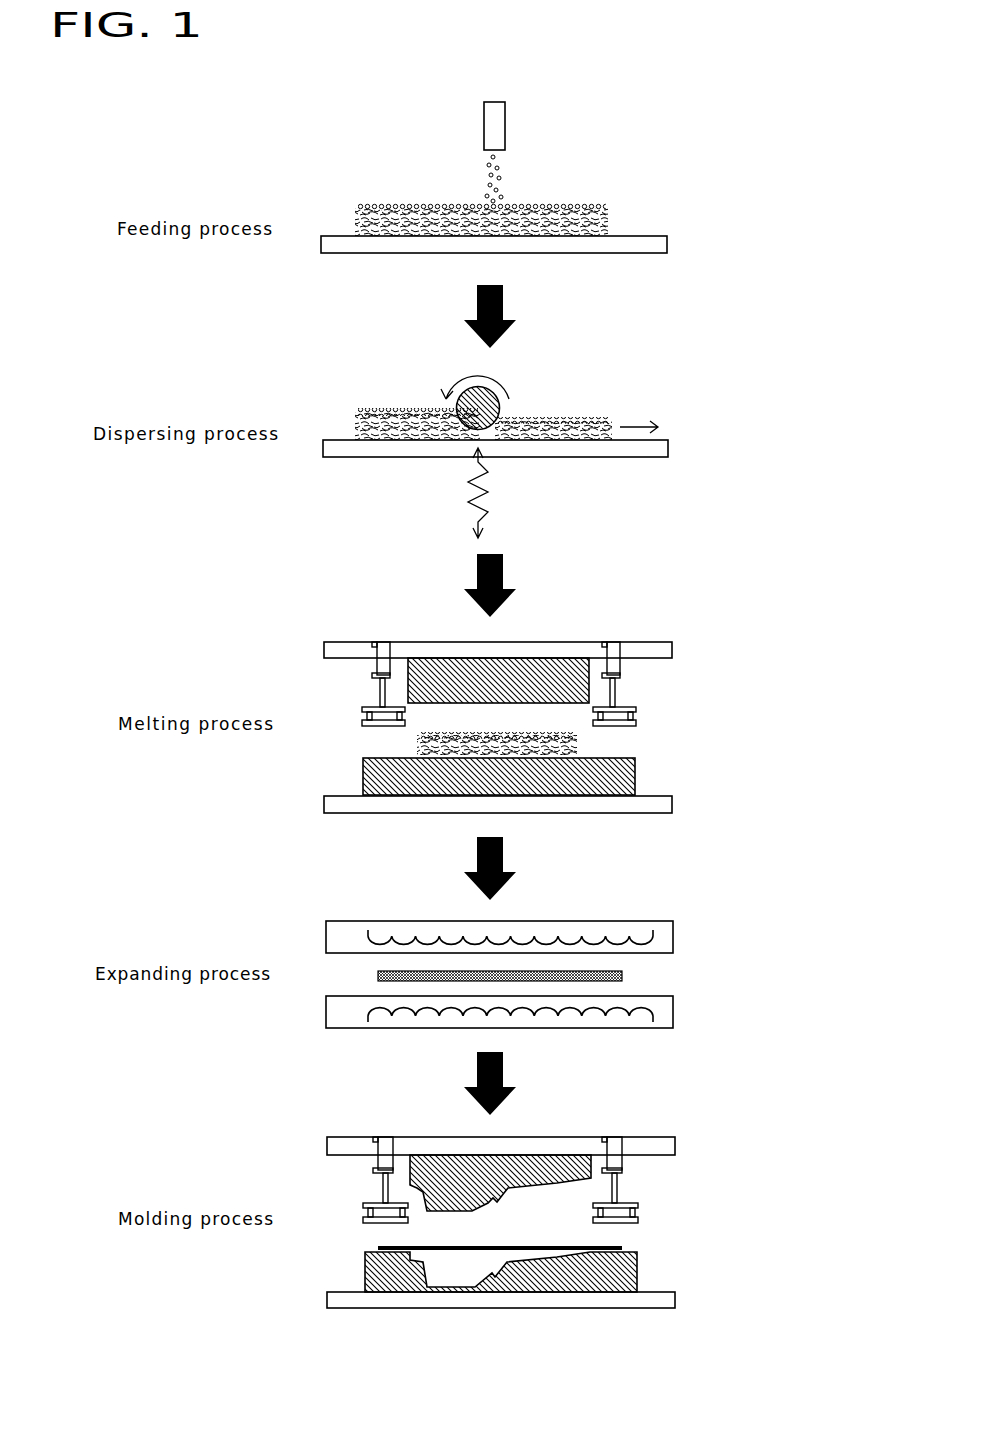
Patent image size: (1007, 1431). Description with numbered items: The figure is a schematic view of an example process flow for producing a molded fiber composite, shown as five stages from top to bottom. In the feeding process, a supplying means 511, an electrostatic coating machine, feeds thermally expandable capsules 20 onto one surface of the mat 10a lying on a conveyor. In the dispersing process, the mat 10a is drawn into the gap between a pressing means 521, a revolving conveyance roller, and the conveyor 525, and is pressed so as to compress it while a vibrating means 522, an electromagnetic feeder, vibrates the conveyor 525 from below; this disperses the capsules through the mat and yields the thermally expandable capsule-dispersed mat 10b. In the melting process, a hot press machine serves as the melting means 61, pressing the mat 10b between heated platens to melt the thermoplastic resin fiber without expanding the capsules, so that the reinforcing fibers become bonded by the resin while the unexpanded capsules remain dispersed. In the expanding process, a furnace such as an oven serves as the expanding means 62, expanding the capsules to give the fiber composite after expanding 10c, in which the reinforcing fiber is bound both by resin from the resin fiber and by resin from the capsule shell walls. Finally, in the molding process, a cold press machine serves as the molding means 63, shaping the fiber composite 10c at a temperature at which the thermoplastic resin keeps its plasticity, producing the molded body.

The supplying means 511 is at (489, 127).
The thermally expandable capsule 20 is at (410, 205).
The mat 10a is at (610, 217).
The thermally expandable capsule-dispersed mat 10b is at (593, 415).
The fiber composite 10c is at (622, 975).
The pressing means 521 is at (498, 406).
The vibrating means 522 is at (456, 506).
The conveyor 525 is at (575, 452).
The melting means 61 is at (645, 623).
The expanding means 62 is at (645, 907).
The molding means 63 is at (651, 1124).